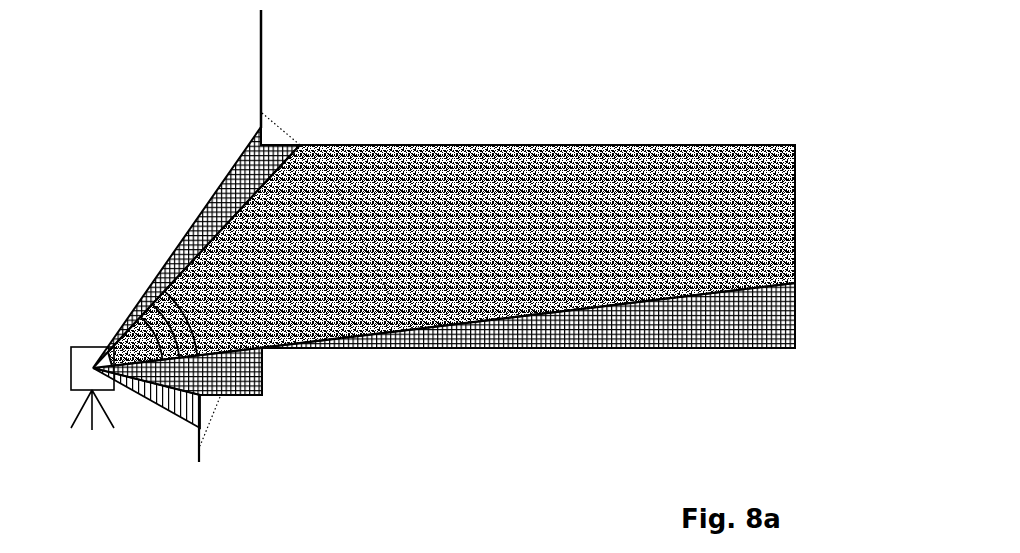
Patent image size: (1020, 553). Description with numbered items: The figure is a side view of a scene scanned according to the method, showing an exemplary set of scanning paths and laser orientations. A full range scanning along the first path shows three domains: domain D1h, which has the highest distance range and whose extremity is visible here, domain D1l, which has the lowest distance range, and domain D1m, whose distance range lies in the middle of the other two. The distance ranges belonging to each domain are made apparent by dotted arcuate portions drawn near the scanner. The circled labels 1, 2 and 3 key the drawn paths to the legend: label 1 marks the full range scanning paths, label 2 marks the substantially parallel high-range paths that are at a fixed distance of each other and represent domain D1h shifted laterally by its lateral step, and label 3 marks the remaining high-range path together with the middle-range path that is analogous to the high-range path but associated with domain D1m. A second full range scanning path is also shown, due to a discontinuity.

The full path P1, P2 1 is at (454, 198).
The path P1h, P2h, P4h 2 is at (447, 210).
The path P3h + P1m 3 is at (440, 223).
The domain D1l is at (421, 398).
The domain D1m is at (444, 287).
The domain D1h is at (451, 311).